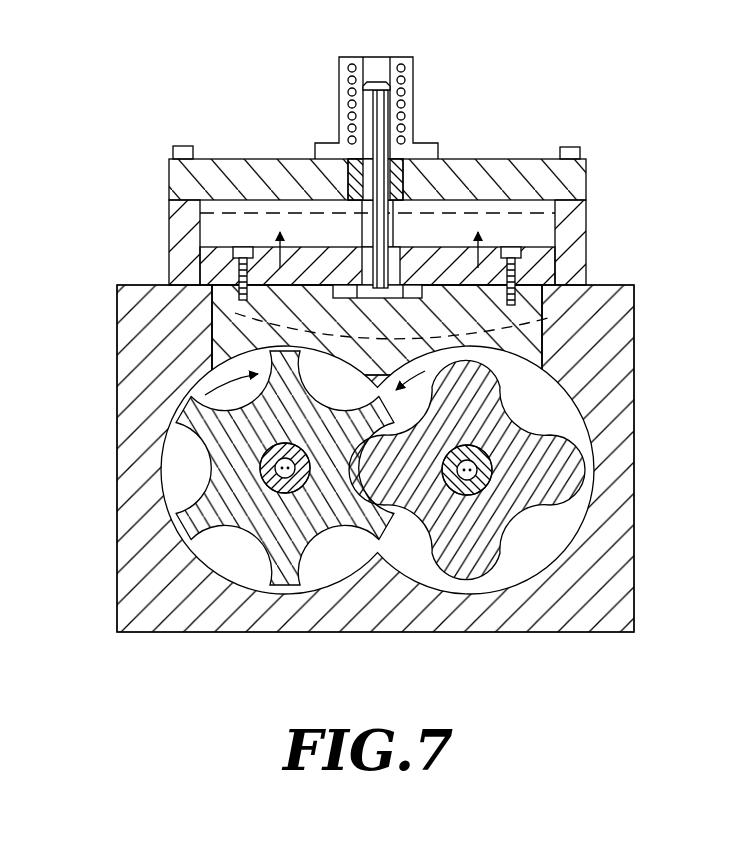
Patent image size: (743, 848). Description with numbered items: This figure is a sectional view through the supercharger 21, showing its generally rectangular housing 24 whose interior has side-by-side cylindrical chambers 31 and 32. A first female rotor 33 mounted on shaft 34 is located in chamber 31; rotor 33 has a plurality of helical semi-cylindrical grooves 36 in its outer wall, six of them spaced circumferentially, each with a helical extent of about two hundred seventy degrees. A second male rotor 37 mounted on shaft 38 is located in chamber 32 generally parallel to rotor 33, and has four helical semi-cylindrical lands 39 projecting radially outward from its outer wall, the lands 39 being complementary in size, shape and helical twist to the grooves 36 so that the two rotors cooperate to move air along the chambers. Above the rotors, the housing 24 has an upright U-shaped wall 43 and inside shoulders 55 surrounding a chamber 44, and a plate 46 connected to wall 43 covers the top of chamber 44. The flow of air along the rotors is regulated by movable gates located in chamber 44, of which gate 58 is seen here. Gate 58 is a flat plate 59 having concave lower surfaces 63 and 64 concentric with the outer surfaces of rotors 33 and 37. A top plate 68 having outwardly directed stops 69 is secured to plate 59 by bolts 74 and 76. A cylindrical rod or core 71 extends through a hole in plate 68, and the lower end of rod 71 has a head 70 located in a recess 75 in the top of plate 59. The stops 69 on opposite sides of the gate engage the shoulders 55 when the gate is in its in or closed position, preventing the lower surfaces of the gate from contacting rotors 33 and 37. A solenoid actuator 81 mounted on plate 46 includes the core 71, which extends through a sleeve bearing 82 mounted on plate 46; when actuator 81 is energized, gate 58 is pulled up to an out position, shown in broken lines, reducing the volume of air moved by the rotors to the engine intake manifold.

The supercharger 21 is at (134, 146).
The housing 24 is at (135, 498).
The cylindrical chamber 31 is at (220, 562).
The cylindrical chamber 32 is at (578, 546).
The first female rotor 33 is at (178, 538).
The shaft 34 is at (283, 492).
The helical semi-cylindrical grooves 36 is at (190, 452).
The second male rotor 37 is at (473, 528).
The shaft 38 is at (485, 468).
The helical semi-cylindrical lands 39 is at (560, 483).
The upright U-shaped wall 43 is at (568, 226).
The chamber 44 is at (213, 206).
The plate 46 is at (575, 186).
The inside shoulders 55 is at (212, 300).
The gate 58 is at (558, 318).
The flat plate 59 is at (545, 325).
The concave lower surface 63 is at (215, 345).
The concave lower surface 64 is at (545, 352).
The top plate 68 is at (562, 272).
The stops 69 is at (207, 287).
The head 70 is at (402, 252).
The rod or core 71 is at (373, 112).
The bolt 74 is at (244, 250).
The recess 75 is at (350, 284).
The bolt 76 is at (512, 250).
The solenoid actuator 81 is at (413, 86).
The sleeve bearing 82 is at (403, 177).